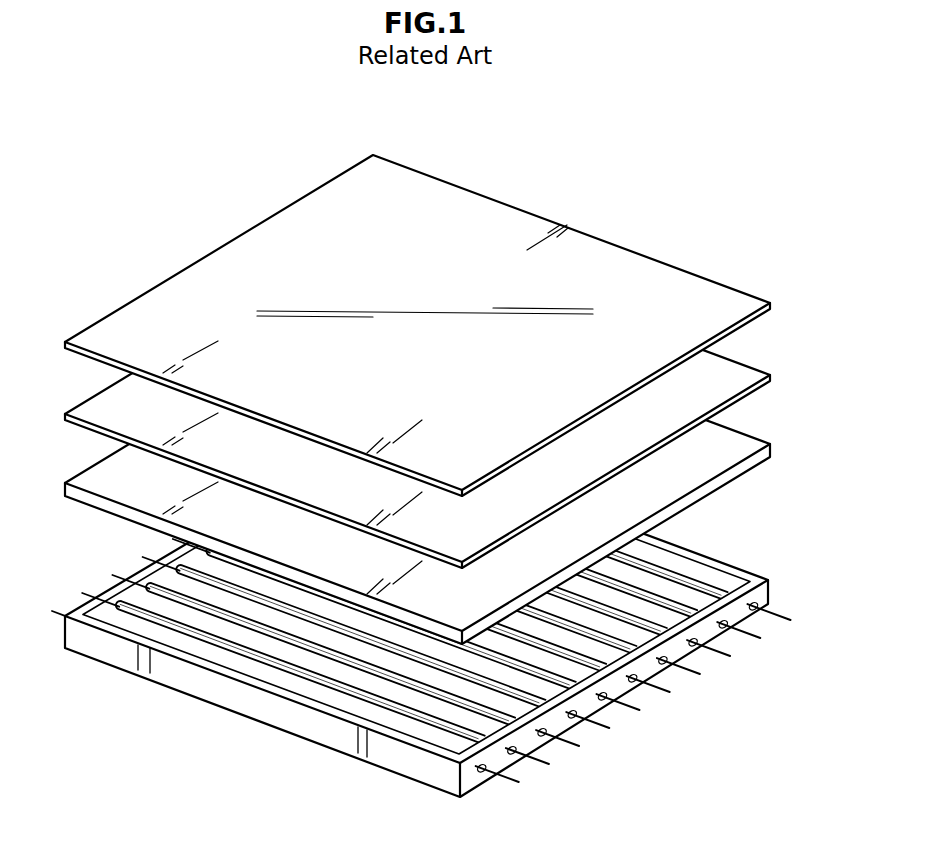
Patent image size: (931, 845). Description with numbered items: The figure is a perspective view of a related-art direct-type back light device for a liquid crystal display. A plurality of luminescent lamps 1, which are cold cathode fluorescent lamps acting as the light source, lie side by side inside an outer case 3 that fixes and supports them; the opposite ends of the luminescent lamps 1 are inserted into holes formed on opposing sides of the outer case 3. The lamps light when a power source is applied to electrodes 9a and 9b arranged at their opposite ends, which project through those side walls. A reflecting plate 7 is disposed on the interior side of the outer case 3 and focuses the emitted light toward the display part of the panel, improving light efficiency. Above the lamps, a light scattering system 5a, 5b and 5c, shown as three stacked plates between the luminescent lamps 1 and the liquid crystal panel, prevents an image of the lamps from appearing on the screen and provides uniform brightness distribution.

The luminescent lamp 1 is at (276, 662).
The outer case 3 is at (445, 774).
The light scattering system 5a is at (725, 437).
The light scattering system 5b is at (725, 368).
The light scattering system 5c is at (725, 296).
The reflecting plate 7 is at (382, 683).
The electrode 9a is at (53, 609).
The electrode 9b is at (512, 784).